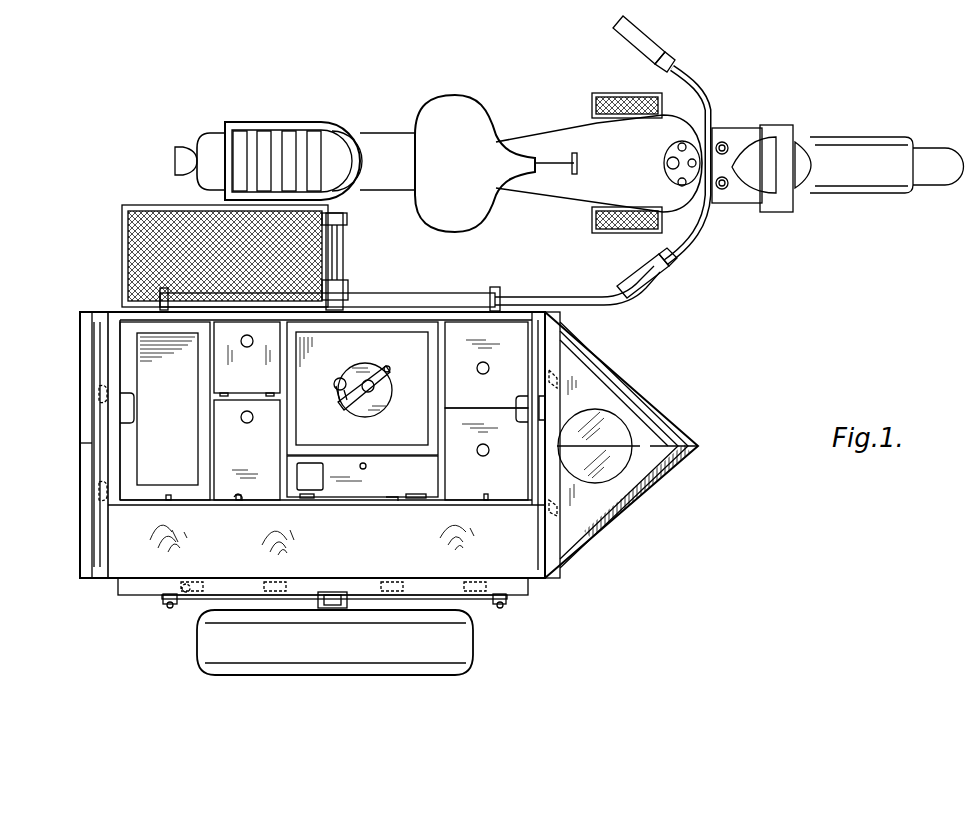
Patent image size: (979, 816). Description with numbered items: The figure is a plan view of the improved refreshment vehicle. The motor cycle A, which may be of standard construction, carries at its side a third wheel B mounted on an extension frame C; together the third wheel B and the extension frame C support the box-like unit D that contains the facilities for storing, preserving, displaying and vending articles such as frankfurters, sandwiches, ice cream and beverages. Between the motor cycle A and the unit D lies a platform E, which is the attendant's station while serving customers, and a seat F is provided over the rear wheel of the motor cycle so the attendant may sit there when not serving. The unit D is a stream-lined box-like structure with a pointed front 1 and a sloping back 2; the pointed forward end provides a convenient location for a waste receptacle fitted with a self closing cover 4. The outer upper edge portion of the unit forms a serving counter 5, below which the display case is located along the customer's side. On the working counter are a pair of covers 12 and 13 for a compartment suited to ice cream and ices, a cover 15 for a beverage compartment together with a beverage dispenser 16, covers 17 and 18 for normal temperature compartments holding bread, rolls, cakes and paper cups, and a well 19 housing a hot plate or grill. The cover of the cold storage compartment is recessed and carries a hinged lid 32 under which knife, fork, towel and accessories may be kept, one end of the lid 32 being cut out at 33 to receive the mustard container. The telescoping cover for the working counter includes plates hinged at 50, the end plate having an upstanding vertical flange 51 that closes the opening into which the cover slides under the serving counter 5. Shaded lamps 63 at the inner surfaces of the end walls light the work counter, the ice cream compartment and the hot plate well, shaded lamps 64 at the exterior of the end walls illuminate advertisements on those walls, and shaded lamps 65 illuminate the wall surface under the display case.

The pointed front 1 is at (656, 487).
The sloping back 2 is at (80, 543).
The self closing cover 4 is at (610, 480).
The serving counter 5 is at (444, 553).
The cover 12 is at (486, 365).
The cover 13 is at (486, 454).
The cover 15 is at (362, 388).
The beverage dispenser 16 is at (340, 410).
The cover 17 is at (247, 450).
The cover 18 is at (247, 359).
The well 19 is at (138, 454).
The hinged lid 32 is at (362, 477).
The cut out 33 is at (323, 482).
The hinge 50 is at (240, 500).
The upstanding vertical flange 51 is at (390, 503).
The shaded lamps 63 is at (134, 408).
The shaded lamps 64 is at (100, 390).
The shaded lamps 65 is at (383, 580).
The motor cycle A is at (743, 123).
The third wheel B is at (420, 650).
The extension frame C is at (345, 255).
The box-like unit D is at (557, 590).
The platform E is at (128, 237).
The seat F is at (293, 122).